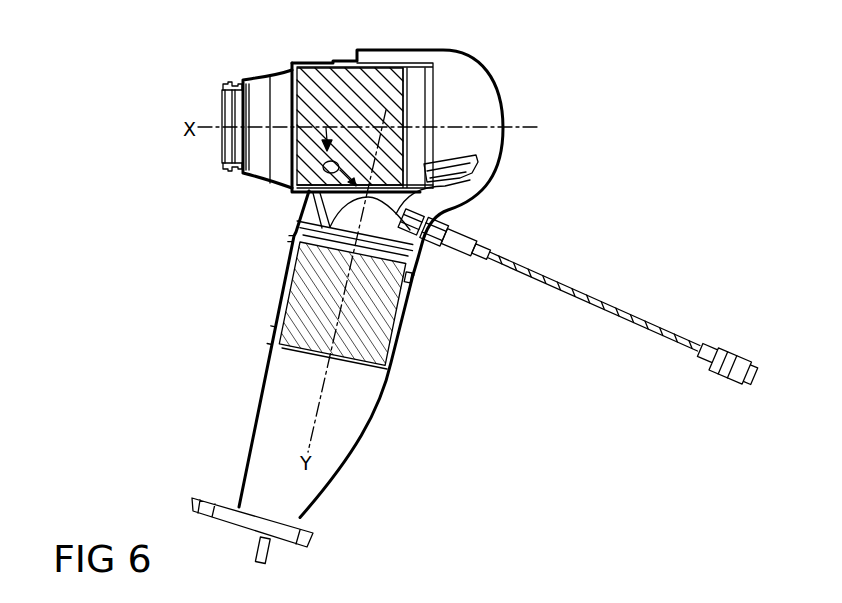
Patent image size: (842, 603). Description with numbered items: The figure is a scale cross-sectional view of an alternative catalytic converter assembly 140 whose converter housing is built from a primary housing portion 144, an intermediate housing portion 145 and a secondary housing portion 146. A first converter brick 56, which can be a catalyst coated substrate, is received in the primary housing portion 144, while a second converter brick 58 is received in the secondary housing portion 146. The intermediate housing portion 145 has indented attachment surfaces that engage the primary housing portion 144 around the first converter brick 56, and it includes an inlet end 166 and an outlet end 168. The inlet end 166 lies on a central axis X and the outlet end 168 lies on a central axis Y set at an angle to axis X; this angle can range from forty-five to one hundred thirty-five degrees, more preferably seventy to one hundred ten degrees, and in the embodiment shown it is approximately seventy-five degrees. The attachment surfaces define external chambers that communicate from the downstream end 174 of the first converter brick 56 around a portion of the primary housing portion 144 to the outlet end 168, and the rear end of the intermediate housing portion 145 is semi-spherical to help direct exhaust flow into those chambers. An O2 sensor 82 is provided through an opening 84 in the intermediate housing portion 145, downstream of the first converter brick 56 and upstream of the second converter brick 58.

The catalytic converter assembly 140 is at (517, 74).
The primary housing portion 144 is at (315, 63).
The intermediate housing portion 145 is at (507, 140).
The secondary housing portion 146 is at (404, 323).
The first converter brick 56 is at (380, 102).
The second converter brick 58 is at (308, 303).
The inlet end 166 is at (282, 172).
The outlet end 168 is at (405, 270).
The downstream end 174 is at (404, 95).
The O2 sensor 82 is at (478, 242).
The opening 84 is at (472, 213).